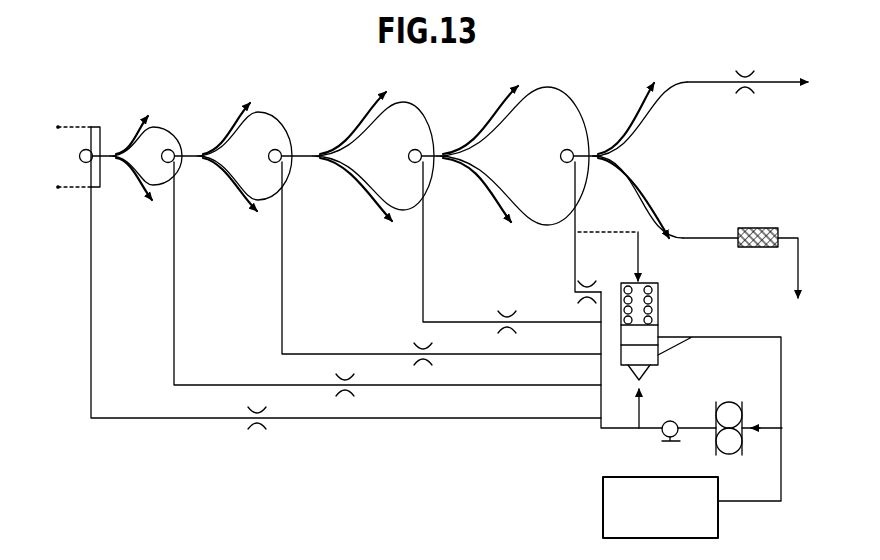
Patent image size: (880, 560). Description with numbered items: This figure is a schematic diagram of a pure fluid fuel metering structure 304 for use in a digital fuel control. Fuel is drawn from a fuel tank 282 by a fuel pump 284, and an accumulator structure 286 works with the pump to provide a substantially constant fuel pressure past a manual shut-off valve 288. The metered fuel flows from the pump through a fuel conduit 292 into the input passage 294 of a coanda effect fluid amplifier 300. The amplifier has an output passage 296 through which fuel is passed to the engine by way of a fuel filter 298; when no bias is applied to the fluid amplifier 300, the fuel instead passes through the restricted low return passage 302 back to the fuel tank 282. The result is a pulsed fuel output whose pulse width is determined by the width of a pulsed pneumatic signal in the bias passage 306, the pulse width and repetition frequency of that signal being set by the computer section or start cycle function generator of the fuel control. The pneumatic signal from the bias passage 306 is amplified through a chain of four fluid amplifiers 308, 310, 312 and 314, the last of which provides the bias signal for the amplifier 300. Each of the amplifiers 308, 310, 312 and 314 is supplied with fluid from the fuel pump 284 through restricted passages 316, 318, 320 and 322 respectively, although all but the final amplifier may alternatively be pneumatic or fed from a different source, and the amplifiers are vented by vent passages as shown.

The fuel tank 282 is at (603, 513).
The fuel pump 284 is at (727, 398).
The accumulator structure 286 is at (660, 310).
The manual shut-off valve 288 is at (690, 398).
The fuel conduit 292 is at (575, 257).
The input passage 294 is at (595, 150).
The output passage 296 is at (672, 223).
The fuel filter 298 is at (762, 248).
The coanda effect fluid amplifier 300 is at (632, 178).
The restricted low return passage 302 is at (665, 97).
The fuel metering structure 304 is at (222, 458).
The bias passage 306 is at (78, 188).
The fluid amplifier 308 is at (143, 137).
The fluid amplifier 310 is at (227, 173).
The fluid amplifier 312 is at (357, 138).
The fluid amplifier 314 is at (545, 84).
The restricted passage 316 is at (322, 420).
The restricted passage 318 is at (432, 385).
The restricted passage 320 is at (482, 355).
The restricted passage 322 is at (423, 258).